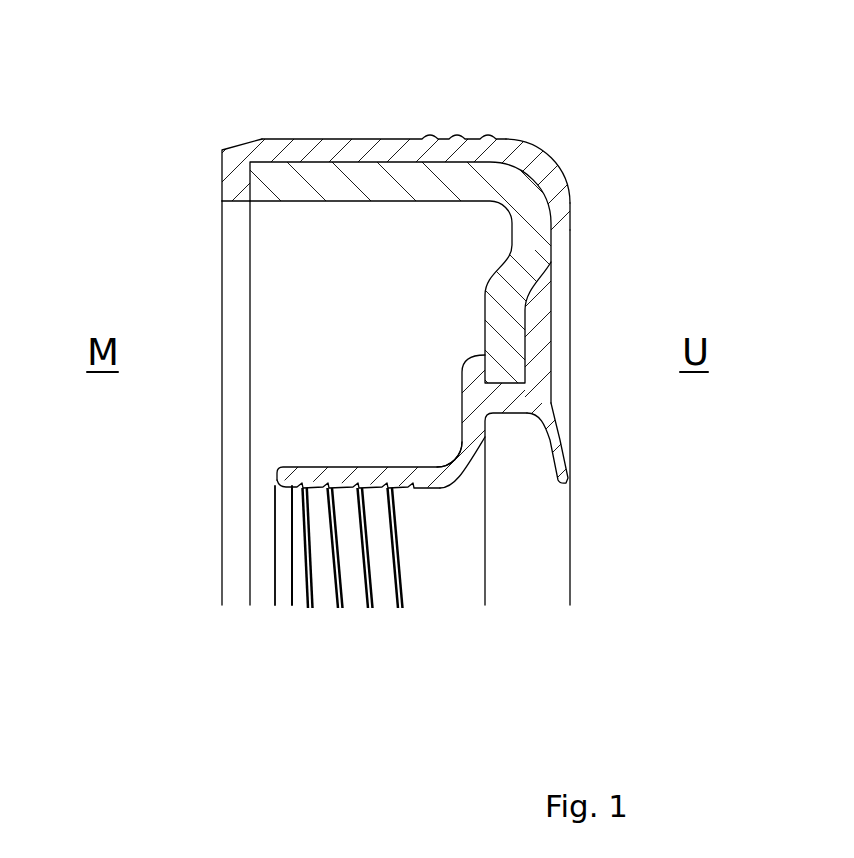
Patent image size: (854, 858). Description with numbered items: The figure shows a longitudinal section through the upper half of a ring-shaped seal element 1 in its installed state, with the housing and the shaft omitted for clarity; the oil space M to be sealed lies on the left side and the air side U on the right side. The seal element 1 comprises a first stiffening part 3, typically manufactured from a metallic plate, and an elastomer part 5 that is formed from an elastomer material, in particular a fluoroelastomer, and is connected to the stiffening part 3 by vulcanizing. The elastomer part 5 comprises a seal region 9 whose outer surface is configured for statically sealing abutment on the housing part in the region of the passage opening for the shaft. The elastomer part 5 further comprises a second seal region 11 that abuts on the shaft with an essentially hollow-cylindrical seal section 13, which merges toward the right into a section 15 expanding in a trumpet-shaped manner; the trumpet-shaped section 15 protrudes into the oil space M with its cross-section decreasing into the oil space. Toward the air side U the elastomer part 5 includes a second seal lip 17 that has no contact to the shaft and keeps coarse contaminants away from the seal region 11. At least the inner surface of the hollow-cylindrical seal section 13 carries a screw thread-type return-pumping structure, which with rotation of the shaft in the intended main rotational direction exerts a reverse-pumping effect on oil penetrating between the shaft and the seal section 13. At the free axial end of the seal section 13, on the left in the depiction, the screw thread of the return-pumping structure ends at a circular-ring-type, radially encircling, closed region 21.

The seal element 1 is at (183, 280).
The stiffening part 3 is at (530, 252).
The elastomer part 5 is at (540, 165).
The seal region 9 is at (303, 139).
The second seal region 11 is at (377, 621).
The hollow-cylindrical seal section 13 is at (343, 477).
The trumpet-shaped section 15 is at (465, 463).
The second seal lip 17 is at (560, 460).
The closed region 21 is at (300, 498).